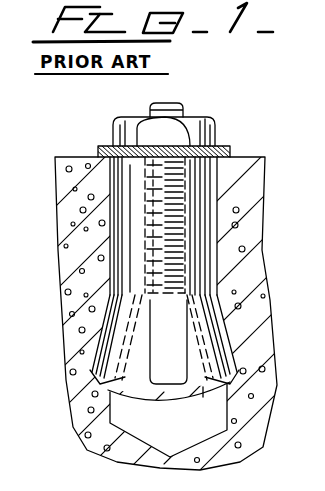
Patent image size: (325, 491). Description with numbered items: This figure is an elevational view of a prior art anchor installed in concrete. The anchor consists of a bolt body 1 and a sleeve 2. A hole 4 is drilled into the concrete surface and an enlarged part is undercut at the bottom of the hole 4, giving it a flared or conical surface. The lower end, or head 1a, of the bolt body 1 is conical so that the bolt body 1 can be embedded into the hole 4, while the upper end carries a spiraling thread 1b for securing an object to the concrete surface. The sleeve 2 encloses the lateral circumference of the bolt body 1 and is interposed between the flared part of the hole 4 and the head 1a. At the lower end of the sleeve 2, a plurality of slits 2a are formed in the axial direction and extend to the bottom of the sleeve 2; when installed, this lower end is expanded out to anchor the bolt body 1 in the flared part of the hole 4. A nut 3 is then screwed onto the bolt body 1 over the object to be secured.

The bolt body 1 is at (193, 108).
The head 1a is at (222, 393).
The spiraling thread 1b is at (150, 110).
The sleeve 2 is at (107, 280).
The slits 2a is at (140, 348).
The nut 3 is at (204, 134).
The hole 4 is at (219, 206).